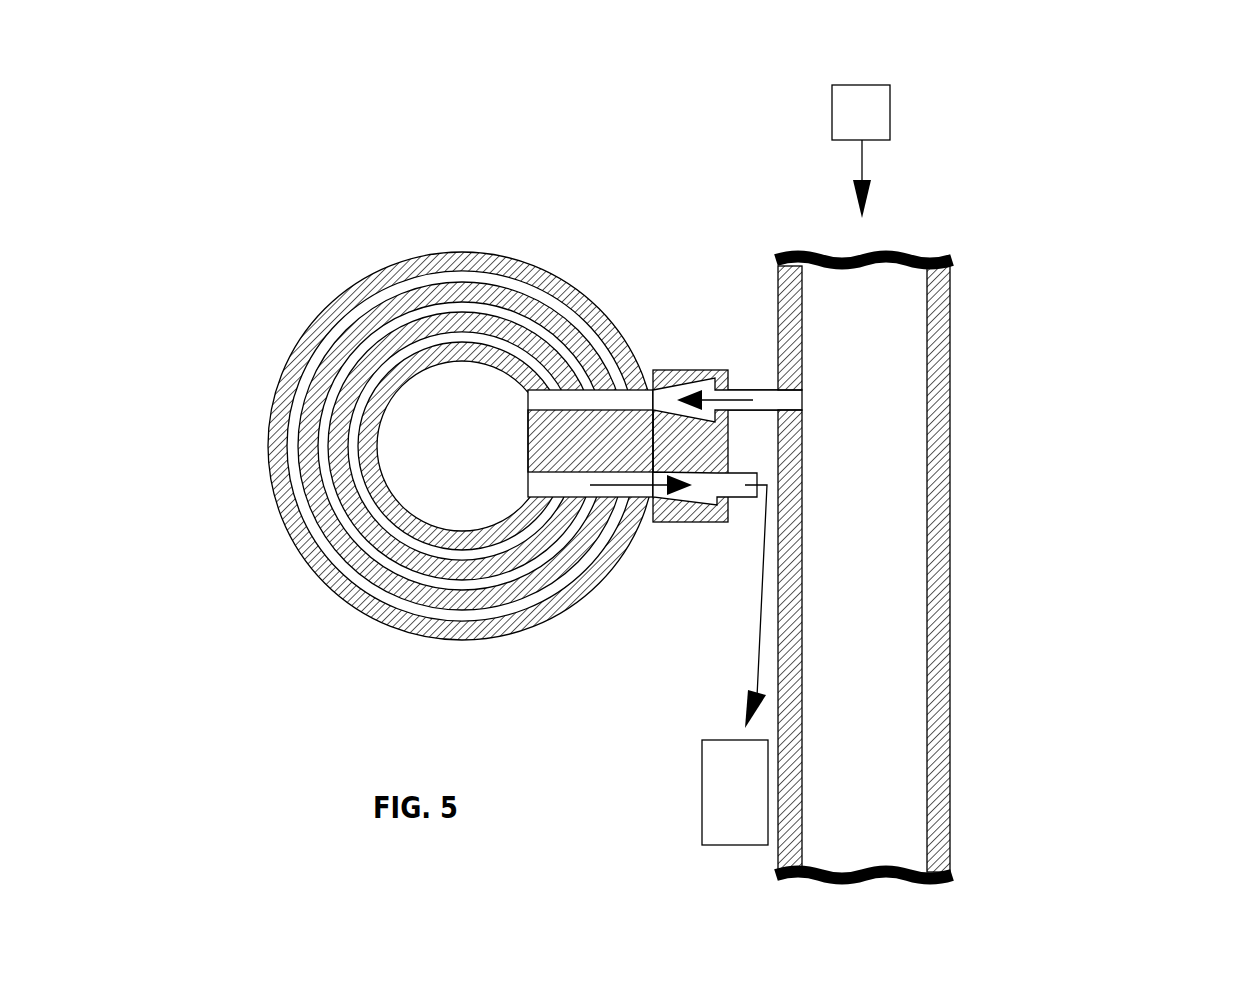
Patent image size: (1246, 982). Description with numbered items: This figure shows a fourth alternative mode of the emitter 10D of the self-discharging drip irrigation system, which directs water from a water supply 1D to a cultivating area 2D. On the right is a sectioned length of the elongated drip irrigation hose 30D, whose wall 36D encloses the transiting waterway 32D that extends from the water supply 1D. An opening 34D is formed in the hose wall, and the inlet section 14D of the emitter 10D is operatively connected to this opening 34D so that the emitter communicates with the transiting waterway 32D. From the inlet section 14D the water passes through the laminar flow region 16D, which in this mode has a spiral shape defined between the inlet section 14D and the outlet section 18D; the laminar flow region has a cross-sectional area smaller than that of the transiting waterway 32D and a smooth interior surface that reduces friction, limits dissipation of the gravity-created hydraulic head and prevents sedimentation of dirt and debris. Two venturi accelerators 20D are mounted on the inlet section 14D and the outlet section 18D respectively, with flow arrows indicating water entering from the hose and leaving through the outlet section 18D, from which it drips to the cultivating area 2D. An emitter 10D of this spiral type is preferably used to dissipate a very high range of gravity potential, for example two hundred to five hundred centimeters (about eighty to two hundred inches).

The fluid source 1D is at (866, 128).
The fluid destination 2D is at (742, 807).
The emitter 10D is at (347, 150).
The inlet section 14D is at (758, 388).
The laminar flow region 16D is at (318, 363).
The outlet section 18D is at (750, 495).
The venturi accelerators 20D is at (693, 370).
The conduit 30D is at (1088, 158).
The conduit lumen 32D is at (877, 404).
The conduit wall opening 34D is at (787, 403).
The conduit wall 36D is at (950, 440).